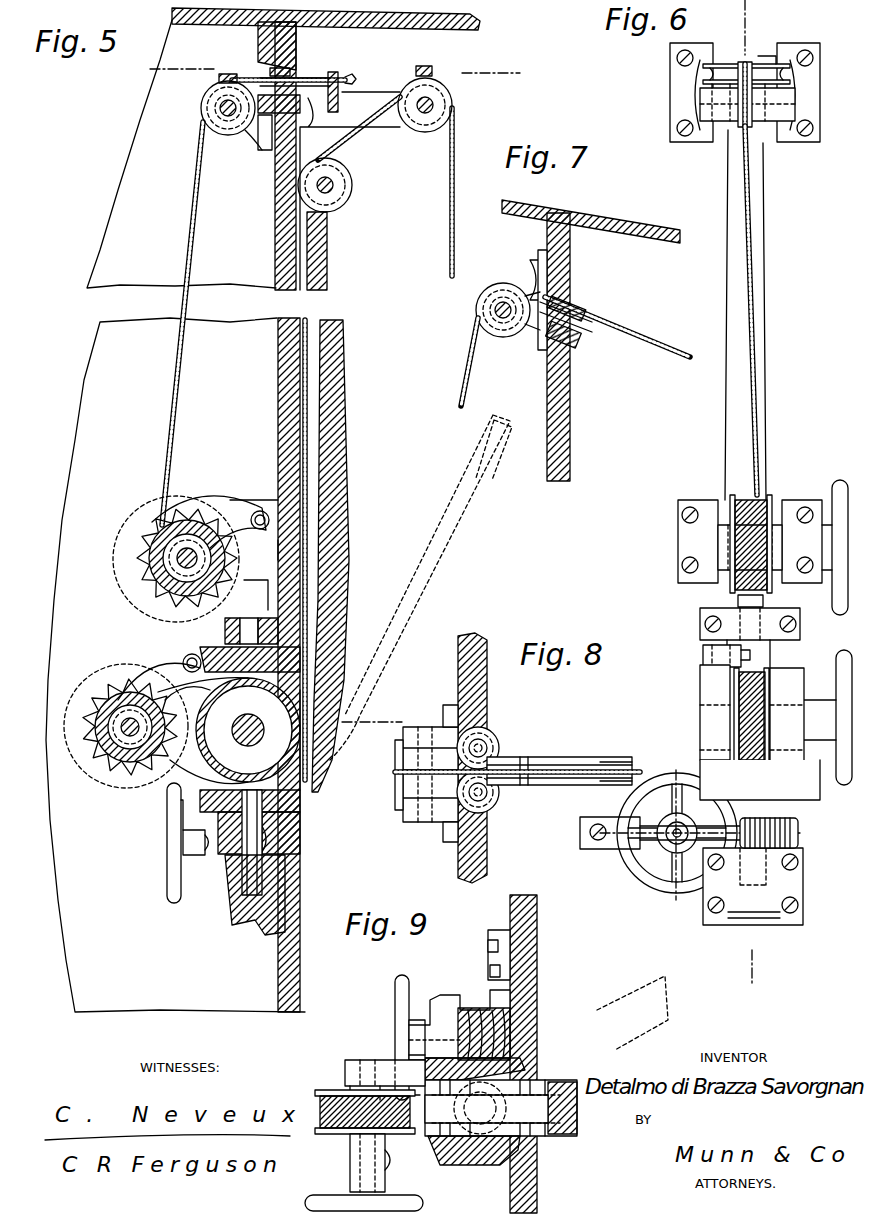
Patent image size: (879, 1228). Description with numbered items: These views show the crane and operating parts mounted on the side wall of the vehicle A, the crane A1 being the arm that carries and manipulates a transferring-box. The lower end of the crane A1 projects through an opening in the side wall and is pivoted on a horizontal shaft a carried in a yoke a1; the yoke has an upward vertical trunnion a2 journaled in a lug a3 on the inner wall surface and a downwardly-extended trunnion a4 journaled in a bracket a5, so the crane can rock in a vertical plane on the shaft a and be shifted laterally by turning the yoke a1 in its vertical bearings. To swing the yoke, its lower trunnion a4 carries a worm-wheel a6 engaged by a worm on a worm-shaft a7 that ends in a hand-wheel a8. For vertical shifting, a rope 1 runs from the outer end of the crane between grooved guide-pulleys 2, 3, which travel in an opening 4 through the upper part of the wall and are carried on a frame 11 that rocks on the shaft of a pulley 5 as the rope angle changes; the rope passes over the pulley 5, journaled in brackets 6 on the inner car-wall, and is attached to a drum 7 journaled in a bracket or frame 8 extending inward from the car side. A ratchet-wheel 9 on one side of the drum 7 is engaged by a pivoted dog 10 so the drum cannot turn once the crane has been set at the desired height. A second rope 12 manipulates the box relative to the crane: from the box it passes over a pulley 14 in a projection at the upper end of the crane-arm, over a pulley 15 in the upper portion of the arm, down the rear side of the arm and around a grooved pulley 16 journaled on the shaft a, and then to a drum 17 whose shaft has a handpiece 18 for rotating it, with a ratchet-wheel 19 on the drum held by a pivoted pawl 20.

In FIG. 5, the rope 1 is at (318, 80).
In FIG. 7, the rope 1 is at (668, 345).
In FIG. 6, the rope 1 is at (762, 360).
In FIG. 8, the rope 1 is at (515, 760).
In FIG. 6, the guide-pulley 2 is at (722, 70).
In FIG. 8, the guide-pulley 2 is at (495, 802).
In FIG. 5, the guide-pulley 3 is at (318, 76).
In FIG. 7, the guide-pulley 3 is at (585, 318).
In FIG. 6, the guide-pulley 3 is at (764, 58).
In FIG. 8, the guide-pulley 3 is at (495, 754).
In FIG. 5, the opening 4 is at (286, 70).
In FIG. 5, the pulley 5 is at (200, 103).
In FIG. 7, the pulley 5 is at (476, 300).
In FIG. 6, the pulley 5 is at (738, 125).
In FIG. 8, the pulley 5 is at (402, 770).
In FIG. 5, the brackets 6 is at (262, 150).
In FIG. 6, the brackets 6 is at (685, 143).
In FIG. 8, the brackets 6 is at (446, 727).
In FIG. 5, the drum 7 is at (188, 508).
In FIG. 5, the bracket or frame 8 is at (205, 605).
In FIG. 5, the ratchet-wheel 9 is at (140, 550).
In FIG. 8, the ratchet-wheel 9 is at (378, 723).
In FIG. 5, the pivoted dog 10 is at (215, 544).
In FIG. 7, the frame 11 is at (575, 338).
In FIG. 8, the frame 11 is at (487, 718).
In FIG. 5, the rope 12 is at (452, 208).
In FIG. 6, the rope 12 is at (740, 745).
In FIG. 9, the rope 12 is at (320, 1106).
In FIG. 5, the pulley 14 is at (415, 128).
In FIG. 5, the pulley 15 is at (352, 188).
In FIG. 5, the grooved pulley 16 is at (300, 760).
In FIG. 8, the grooved pulley 16 is at (351, 763).
In FIG. 6, the drum 17 is at (770, 680).
In FIG. 6, the handpiece 18 is at (840, 778).
In FIG. 9, the handpiece 18 is at (322, 1196).
In FIG. 5, the ratchet-wheel 19 is at (102, 690).
In FIG. 6, the ratchet-wheel 19 is at (760, 680).
In FIG. 9, the ratchet-wheel 19 is at (328, 1090).
In FIG. 5, the pivoted pawl 20 is at (160, 690).
In FIG. 6, the pivoted pawl 20 is at (705, 655).
In FIG. 9, the pivoted pawl 20 is at (380, 1080).
In FIG. 5, the vehicle A is at (263, 510).
In FIG. 7, the vehicle A is at (591, 339).
In FIG. 5, the crane A1 is at (347, 520).
In FIG. 6, the crane A1 is at (770, 278).
In FIG. 9, the crane A1 is at (578, 1054).
In FIG. 5, the shaft a is at (256, 746).
In FIG. 9, the shaft a is at (478, 1162).
In FIG. 5, the yoke a1 is at (300, 796).
In FIG. 9, the yoke a1 is at (440, 1165).
In FIG. 5, the vertical trunnion a2 is at (225, 646).
In FIG. 5, the lug a3 is at (265, 620).
In FIG. 6, the lug a3 is at (665, 890).
In FIG. 5, the downwardly-extended trunnion a4 is at (252, 884).
In FIG. 5, the bracket a5 is at (228, 895).
In FIG. 5, the worm-wheel a6 is at (298, 838).
In FIG. 6, the worm-wheel a6 is at (800, 832).
In FIG. 9, the worm-wheel a6 is at (525, 1075).
In FIG. 5, the worm-shaft a7 is at (196, 855).
In FIG. 9, the worm-shaft a7 is at (515, 1022).
In FIG. 5, the hand-wheel a8 is at (167, 845).
In FIG. 9, the hand-wheel a8 is at (412, 995).